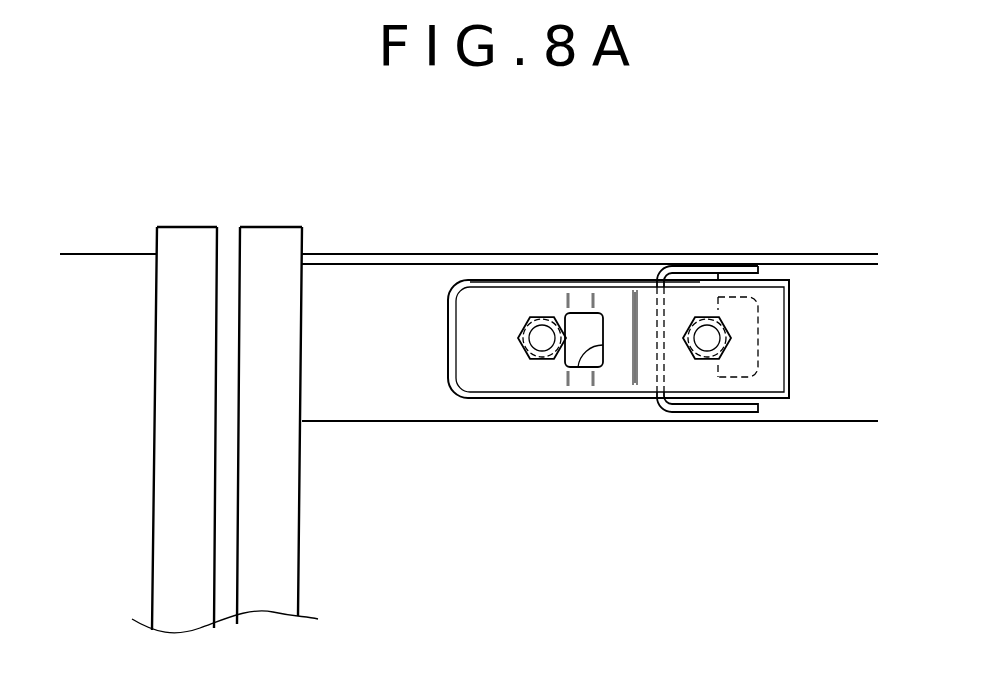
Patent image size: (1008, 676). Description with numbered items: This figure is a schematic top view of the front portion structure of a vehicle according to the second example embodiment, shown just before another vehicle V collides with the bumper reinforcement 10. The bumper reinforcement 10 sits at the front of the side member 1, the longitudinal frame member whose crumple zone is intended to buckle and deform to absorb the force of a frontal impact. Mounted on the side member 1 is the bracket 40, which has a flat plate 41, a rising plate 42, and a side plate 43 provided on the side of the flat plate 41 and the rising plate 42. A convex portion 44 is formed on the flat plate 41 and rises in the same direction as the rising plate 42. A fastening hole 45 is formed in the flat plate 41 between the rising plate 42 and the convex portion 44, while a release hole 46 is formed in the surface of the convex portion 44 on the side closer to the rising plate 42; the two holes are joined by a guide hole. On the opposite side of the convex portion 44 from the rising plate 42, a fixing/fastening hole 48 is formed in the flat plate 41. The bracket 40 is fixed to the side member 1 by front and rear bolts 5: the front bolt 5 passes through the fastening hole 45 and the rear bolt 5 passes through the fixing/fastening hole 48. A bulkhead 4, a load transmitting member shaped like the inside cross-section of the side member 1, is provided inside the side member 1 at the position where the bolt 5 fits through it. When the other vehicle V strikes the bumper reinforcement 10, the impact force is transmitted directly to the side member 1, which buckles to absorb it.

The other vehicle V is at (182, 243).
The bumper reinforcement 10 is at (268, 240).
The side member 1 is at (400, 254).
The bulkhead 4 is at (698, 272).
The bolt 5 is at (545, 323).
The bracket 40 is at (637, 280).
The flat plate 41 is at (775, 375).
The rising plate 42 is at (452, 358).
The side plate 43 is at (583, 281).
The convex portion 44 is at (618, 372).
The fastening hole 45 is at (540, 354).
The release hole 46 is at (587, 370).
The fixing/fastening hole 48 is at (710, 356).